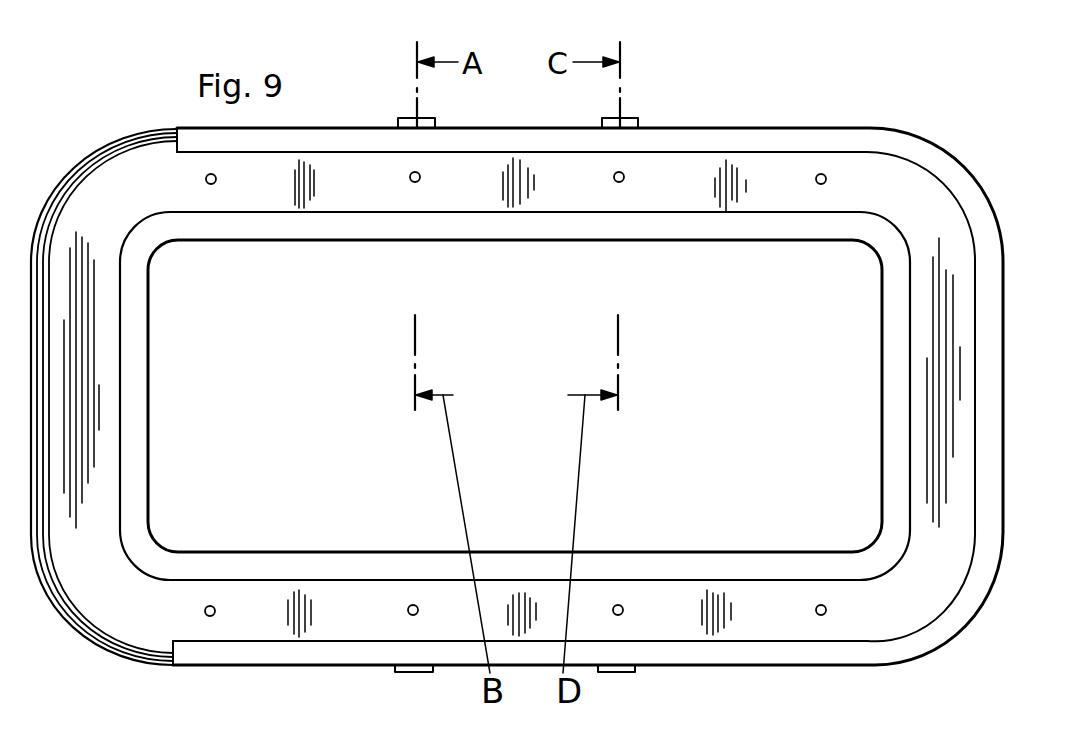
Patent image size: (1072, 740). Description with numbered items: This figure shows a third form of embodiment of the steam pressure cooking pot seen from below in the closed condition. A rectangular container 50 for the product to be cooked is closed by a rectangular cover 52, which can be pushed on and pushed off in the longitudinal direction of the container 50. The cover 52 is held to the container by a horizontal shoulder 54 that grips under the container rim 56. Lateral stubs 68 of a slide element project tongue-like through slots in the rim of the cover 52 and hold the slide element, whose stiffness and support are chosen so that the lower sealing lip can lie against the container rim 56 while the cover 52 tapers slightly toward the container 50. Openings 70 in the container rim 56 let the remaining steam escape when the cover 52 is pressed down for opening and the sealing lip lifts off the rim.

The container 50 is at (825, 282).
The cover 52 is at (853, 127).
The horizontal shoulder 54 is at (722, 140).
The container rim 56 is at (948, 305).
The lateral stubs 68 is at (618, 669).
The openings 70 is at (825, 614).